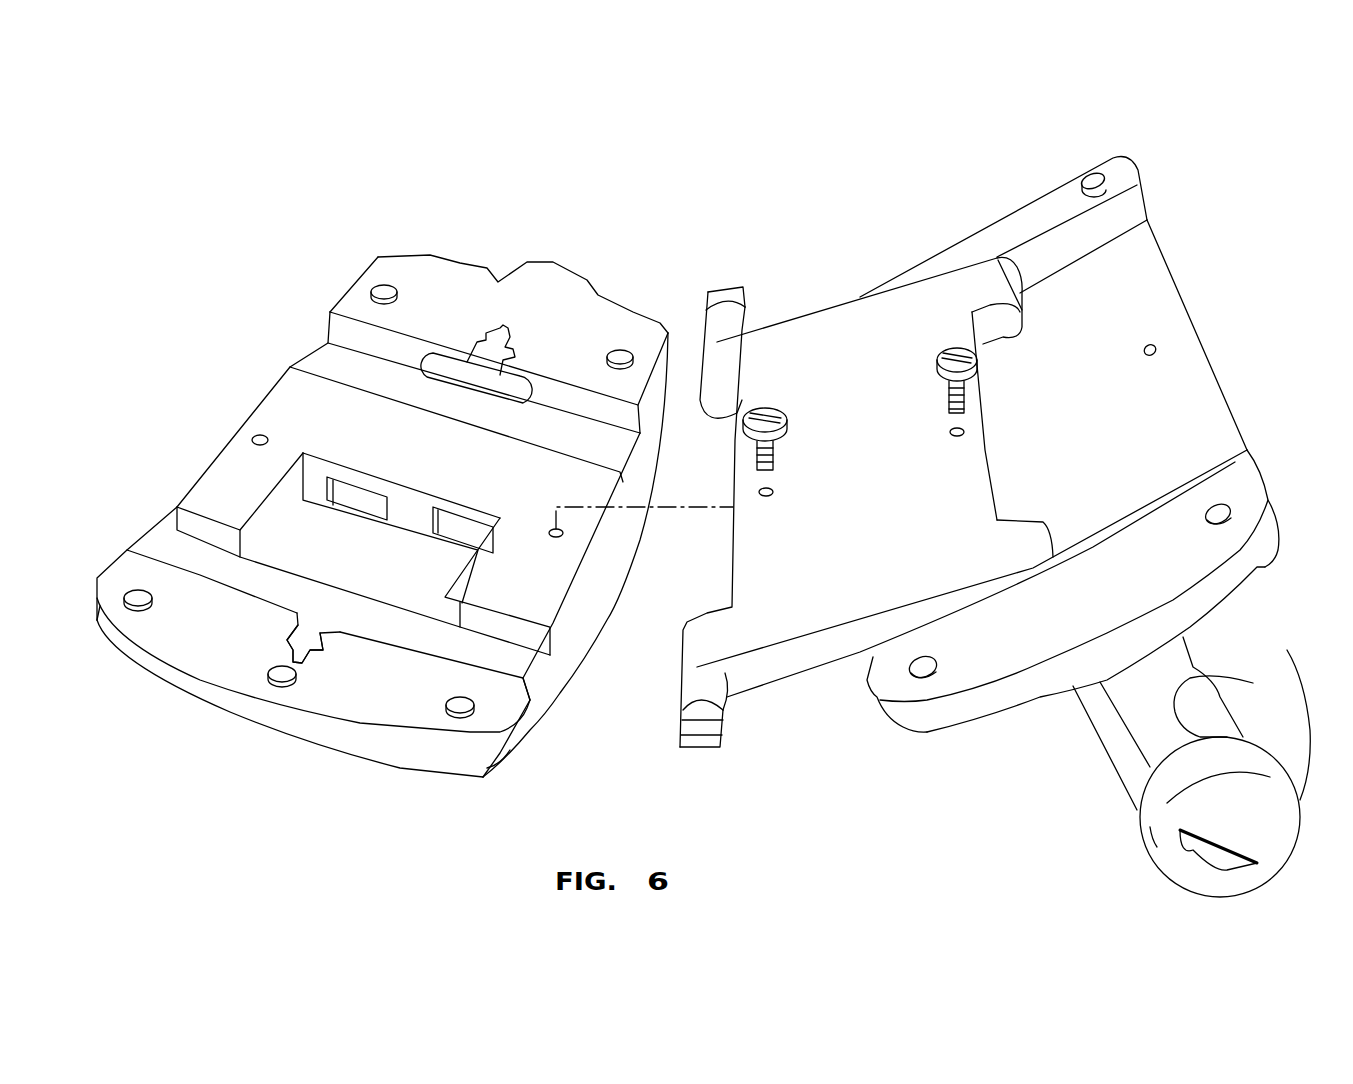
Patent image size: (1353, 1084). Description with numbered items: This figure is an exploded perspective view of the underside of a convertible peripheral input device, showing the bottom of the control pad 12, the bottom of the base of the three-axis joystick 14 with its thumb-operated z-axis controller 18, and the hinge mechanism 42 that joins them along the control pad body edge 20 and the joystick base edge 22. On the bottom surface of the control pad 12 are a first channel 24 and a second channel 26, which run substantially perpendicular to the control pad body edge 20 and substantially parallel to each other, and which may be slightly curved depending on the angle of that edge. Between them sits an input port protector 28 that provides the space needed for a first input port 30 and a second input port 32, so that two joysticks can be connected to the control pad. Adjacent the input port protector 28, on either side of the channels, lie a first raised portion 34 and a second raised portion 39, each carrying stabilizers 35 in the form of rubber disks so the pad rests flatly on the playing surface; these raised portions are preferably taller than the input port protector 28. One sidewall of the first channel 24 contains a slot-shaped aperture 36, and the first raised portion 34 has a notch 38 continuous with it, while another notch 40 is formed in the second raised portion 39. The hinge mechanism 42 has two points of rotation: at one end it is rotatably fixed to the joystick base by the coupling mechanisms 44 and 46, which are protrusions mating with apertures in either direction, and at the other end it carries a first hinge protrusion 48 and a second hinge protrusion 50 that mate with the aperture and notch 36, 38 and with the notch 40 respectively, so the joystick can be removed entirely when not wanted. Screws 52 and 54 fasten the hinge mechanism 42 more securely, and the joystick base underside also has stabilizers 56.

The control pad 12 is at (458, 258).
The three-axis joystick 14 is at (1183, 637).
The thumb-operated z-axis controller 18 is at (1237, 870).
The control pad body edge 20 is at (597, 606).
The joystick base edge 22 is at (870, 657).
The first channel 24 is at (327, 353).
The second channel 26 is at (165, 540).
The input port protector 28 is at (408, 469).
The first input port 30 is at (365, 498).
The second input port 32 is at (458, 530).
The first raised portion 34 is at (442, 311).
The stabilizers 35 is at (383, 290).
The slot-shaped aperture 36 is at (500, 328).
The notch 38 is at (523, 373).
The second raised portion 39 is at (200, 639).
The notch 40 is at (400, 615).
The hinge mechanism 42 is at (850, 511).
The coupling mechanism 44 is at (1020, 296).
The coupling mechanism 46 is at (1053, 553).
The first hinge protrusion 48 is at (737, 287).
The second hinge protrusion 50 is at (703, 730).
The screw 52 is at (787, 450).
The screw 54 is at (963, 400).
The stabilizers 56 is at (1095, 175).